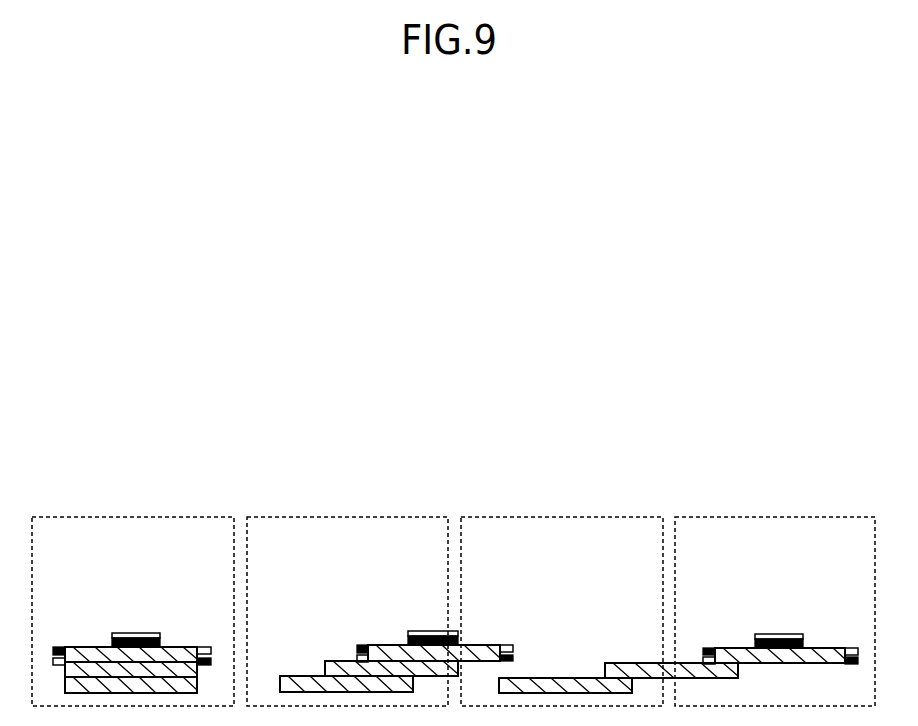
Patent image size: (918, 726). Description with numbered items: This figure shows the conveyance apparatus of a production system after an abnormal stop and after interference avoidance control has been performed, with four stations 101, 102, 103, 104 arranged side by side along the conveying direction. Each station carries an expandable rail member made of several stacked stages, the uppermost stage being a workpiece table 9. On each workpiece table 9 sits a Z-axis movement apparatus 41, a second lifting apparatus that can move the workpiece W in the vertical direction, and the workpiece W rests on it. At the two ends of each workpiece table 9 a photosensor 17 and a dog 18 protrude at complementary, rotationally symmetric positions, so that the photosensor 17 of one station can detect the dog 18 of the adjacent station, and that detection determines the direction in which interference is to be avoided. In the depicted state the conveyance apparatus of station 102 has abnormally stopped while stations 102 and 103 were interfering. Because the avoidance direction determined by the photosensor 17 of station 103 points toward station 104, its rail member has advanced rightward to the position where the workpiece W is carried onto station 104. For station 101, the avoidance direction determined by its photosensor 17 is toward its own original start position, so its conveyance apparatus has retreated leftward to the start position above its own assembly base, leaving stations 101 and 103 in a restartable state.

The workpiece table 9 is at (173, 645).
The photosensor 17 is at (63, 647).
The dog 18 is at (202, 645).
The Z-axis movement apparatus 41 is at (145, 637).
The workpiece W is at (125, 638).
The station 101 is at (156, 517).
The station 102 is at (368, 517).
The station 103 is at (582, 517).
The station 104 is at (767, 517).